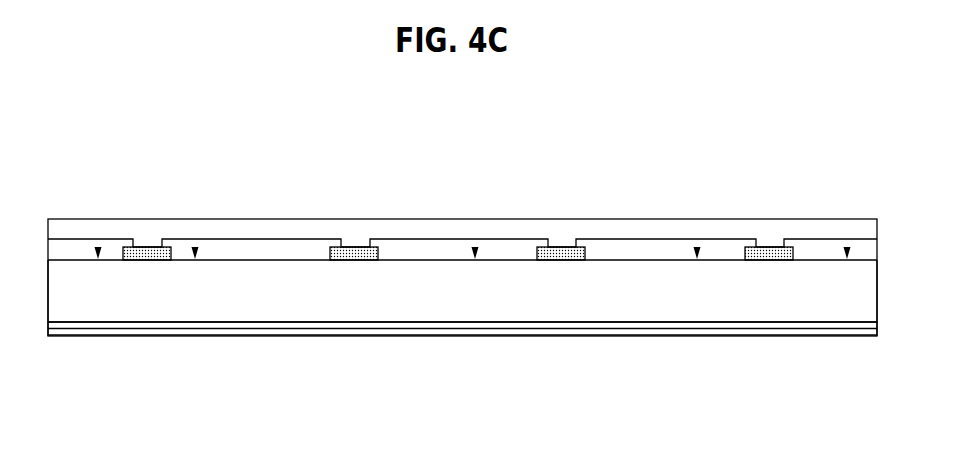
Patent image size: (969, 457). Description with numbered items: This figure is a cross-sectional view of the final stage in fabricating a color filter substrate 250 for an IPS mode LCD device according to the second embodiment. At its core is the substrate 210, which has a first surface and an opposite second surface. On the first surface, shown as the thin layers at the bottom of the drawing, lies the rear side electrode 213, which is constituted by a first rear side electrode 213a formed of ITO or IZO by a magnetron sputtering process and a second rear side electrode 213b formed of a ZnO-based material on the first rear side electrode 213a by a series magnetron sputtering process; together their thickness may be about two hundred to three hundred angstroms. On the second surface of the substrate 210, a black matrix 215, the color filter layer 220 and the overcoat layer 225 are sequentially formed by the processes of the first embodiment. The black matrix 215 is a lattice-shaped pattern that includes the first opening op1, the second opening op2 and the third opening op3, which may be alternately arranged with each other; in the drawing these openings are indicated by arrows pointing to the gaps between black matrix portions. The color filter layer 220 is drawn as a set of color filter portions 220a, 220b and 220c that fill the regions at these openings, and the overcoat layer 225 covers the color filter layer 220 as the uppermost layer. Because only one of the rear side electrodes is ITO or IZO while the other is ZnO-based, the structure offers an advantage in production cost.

The color filter substrate 250 is at (771, 146).
The overcoat layer 225 is at (272, 228).
The color filter layer 220 is at (497, 131).
The color filter 220a is at (308, 248).
The color filter 220b is at (415, 247).
The color filter 220c is at (598, 247).
The black matrix 215 is at (764, 246).
The substrate 210 is at (858, 312).
The rear side electrode 213 is at (698, 404).
The first rear side electrode 213a is at (697, 322).
The second rear side electrode 213b is at (640, 329).
The first opening op1 is at (195, 246).
The second opening op2 is at (475, 246).
The third opening op3 is at (98, 246).